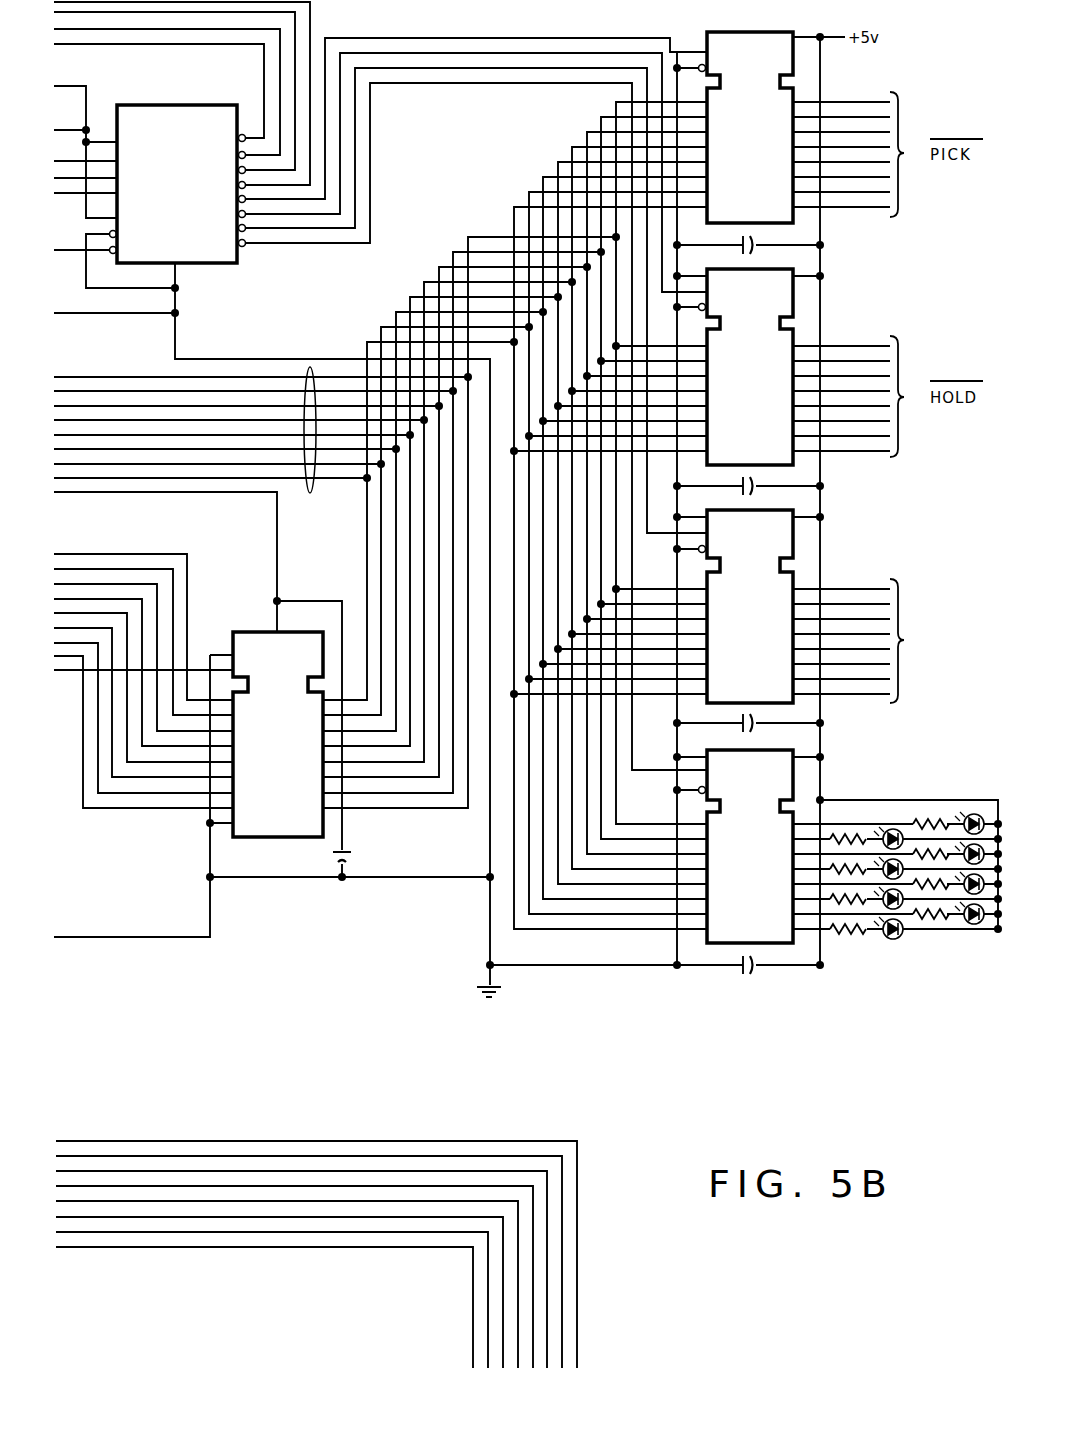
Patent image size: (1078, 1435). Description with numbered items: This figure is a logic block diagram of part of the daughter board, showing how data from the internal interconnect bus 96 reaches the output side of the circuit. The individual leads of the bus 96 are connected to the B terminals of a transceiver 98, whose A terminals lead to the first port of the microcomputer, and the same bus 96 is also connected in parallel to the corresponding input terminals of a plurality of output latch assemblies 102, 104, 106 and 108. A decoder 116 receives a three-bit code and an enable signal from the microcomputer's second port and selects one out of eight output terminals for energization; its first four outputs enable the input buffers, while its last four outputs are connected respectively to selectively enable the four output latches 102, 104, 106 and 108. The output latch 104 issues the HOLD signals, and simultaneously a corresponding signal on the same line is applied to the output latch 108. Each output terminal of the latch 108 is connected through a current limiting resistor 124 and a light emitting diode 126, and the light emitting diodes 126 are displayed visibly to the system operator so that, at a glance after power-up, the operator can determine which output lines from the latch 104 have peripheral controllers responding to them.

The decoder 116 is at (188, 105).
The internal interconnect bus 96 is at (261, 443).
The transceiver 98 is at (260, 632).
The output latch assembly 102 is at (750, 127).
The output latch 104 is at (750, 367).
The output latch assembly 106 is at (750, 606).
The output latch 108 is at (750, 846).
The current limiting resistor 124 is at (924, 822).
The light emitting diode 126 is at (1000, 905).